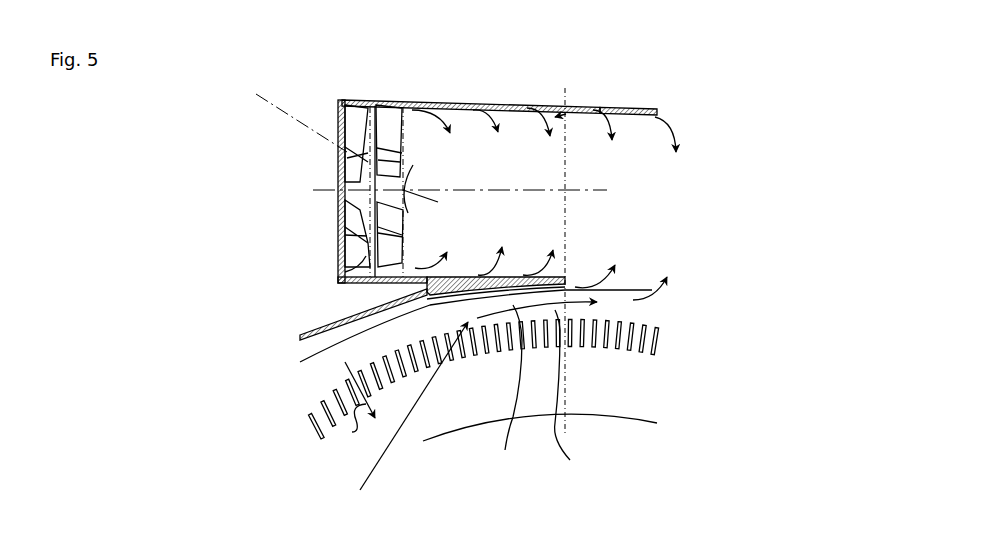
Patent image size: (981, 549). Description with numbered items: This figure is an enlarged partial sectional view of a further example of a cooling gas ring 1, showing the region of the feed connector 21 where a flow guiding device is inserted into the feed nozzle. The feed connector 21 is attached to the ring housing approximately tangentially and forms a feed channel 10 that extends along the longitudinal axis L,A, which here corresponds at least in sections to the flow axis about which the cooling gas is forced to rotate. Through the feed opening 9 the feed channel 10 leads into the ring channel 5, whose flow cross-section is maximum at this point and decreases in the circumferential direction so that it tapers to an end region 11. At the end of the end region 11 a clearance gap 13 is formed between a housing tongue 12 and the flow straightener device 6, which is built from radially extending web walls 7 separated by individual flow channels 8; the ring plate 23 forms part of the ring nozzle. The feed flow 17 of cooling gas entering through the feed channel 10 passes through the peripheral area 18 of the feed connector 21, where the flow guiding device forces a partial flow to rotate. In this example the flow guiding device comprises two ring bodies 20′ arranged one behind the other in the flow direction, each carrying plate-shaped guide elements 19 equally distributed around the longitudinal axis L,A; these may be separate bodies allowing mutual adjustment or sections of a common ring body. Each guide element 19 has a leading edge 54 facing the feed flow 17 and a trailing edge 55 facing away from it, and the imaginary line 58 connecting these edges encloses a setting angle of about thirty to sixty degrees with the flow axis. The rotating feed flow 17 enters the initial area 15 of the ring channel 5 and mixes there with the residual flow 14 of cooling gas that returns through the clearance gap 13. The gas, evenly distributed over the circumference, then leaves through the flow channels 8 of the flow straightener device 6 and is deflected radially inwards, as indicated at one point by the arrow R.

The cooling gas ring 1 is at (657, 100).
The ring channel 5 is at (390, 330).
The flow straightener device 6 is at (662, 340).
The web walls 7 is at (653, 355).
The flow channels 8 is at (643, 353).
The feed opening 9 is at (593, 105).
The feed channel 10 is at (465, 97).
The end region 11 is at (395, 424).
The housing tongue 12 is at (567, 281).
The clearance gap 13 is at (578, 402).
The residual flow 14 is at (512, 397).
The initial area 15 is at (622, 205).
The feed flow 17 is at (500, 110).
The peripheral area 18 is at (578, 164).
The guide elements 19 is at (353, 113).
The ring body 20′ is at (342, 107).
The feed connector 21 is at (435, 97).
The ring plate 23 is at (447, 418).
The leading edge 54 is at (343, 245).
The trailing edge 55 is at (343, 267).
The imaginary line 58 is at (273, 103).
The longitudinal axis and flow axis L,A is at (327, 190).
The radial flow R is at (357, 417).